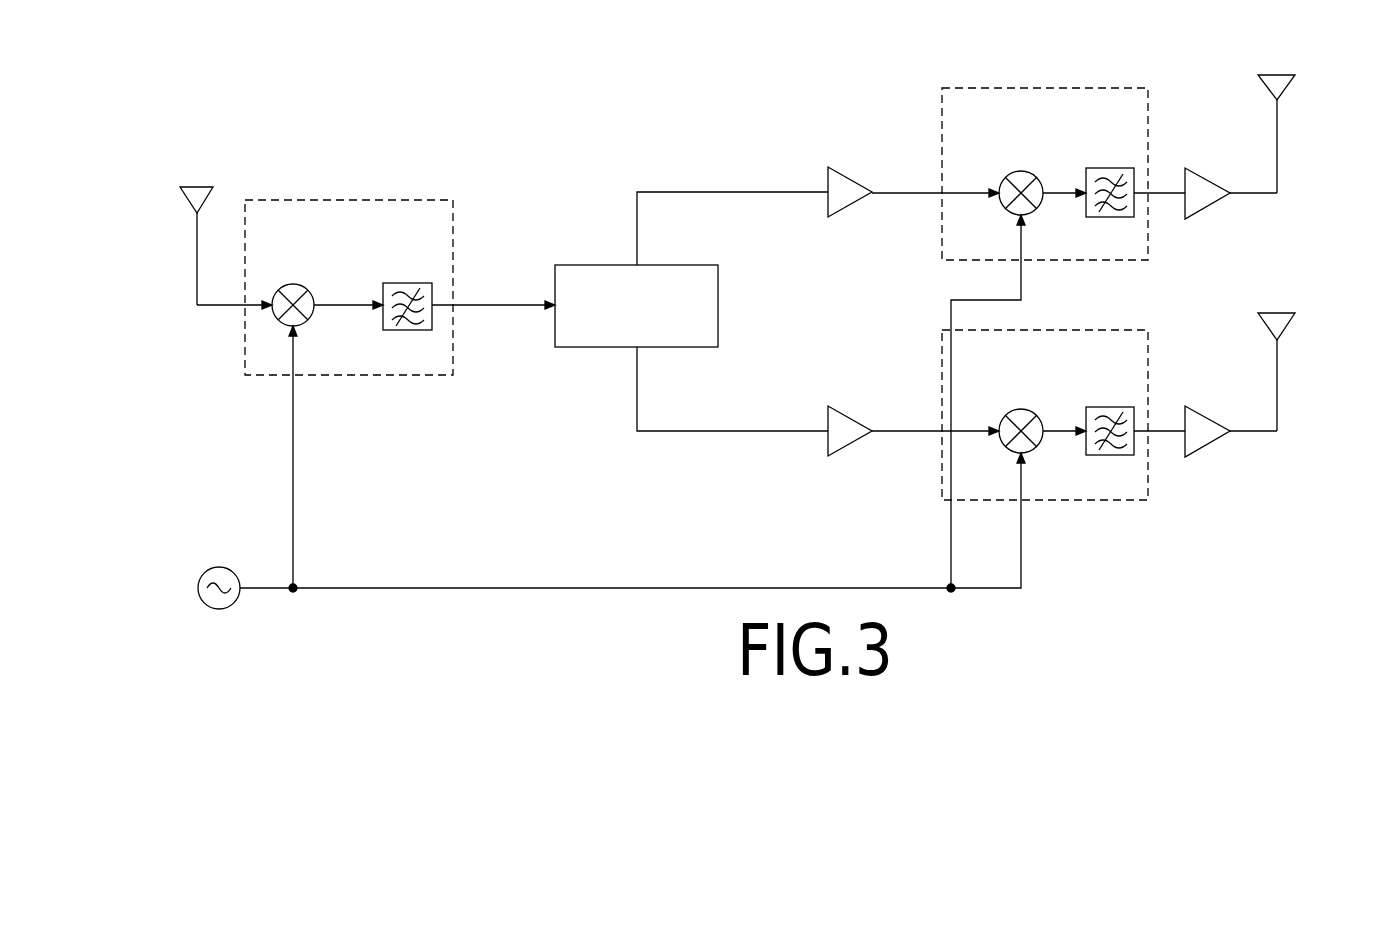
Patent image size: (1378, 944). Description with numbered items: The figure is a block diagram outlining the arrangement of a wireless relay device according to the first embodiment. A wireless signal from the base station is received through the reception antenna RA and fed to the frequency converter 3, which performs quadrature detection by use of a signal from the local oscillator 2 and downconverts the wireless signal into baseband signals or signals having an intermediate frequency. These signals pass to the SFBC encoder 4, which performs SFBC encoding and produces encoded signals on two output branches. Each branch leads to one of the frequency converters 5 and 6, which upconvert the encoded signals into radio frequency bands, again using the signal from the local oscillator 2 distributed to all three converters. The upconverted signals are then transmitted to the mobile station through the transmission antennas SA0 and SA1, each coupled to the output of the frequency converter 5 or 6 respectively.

The local oscillator 2 is at (217, 567).
The frequency converter 3 is at (350, 200).
The SFBC encoder 4 is at (596, 348).
The frequency converter 5 is at (1047, 88).
The frequency converter 6 is at (1109, 500).
The reception antenna RA is at (197, 259).
The transmission antenna SA0 is at (1280, 148).
The transmission antenna SA1 is at (1280, 388).